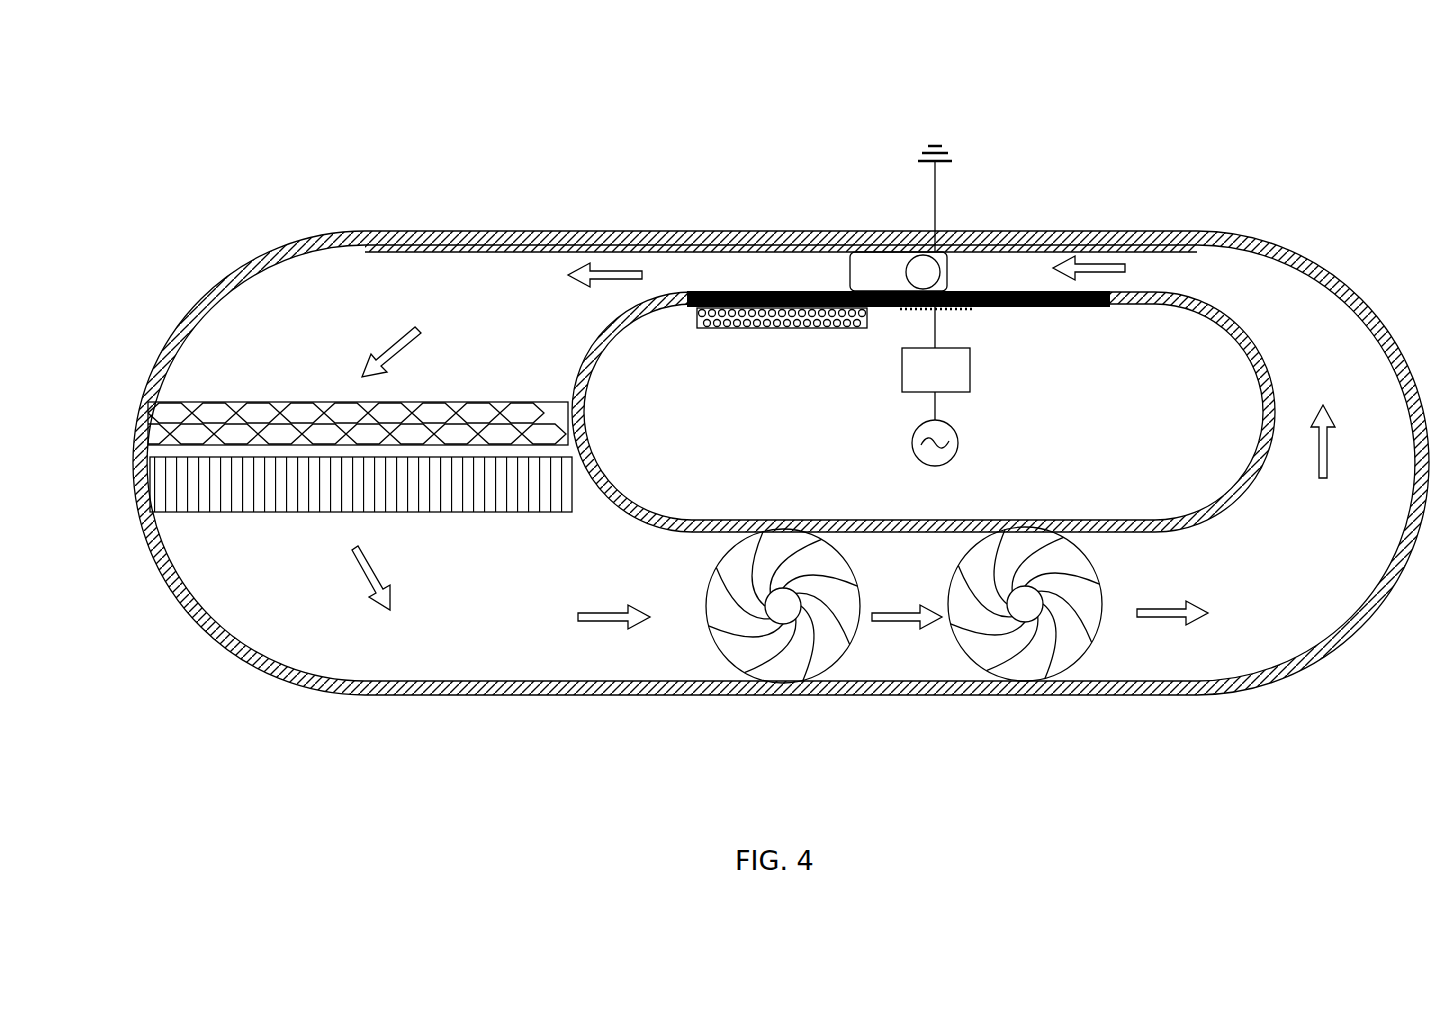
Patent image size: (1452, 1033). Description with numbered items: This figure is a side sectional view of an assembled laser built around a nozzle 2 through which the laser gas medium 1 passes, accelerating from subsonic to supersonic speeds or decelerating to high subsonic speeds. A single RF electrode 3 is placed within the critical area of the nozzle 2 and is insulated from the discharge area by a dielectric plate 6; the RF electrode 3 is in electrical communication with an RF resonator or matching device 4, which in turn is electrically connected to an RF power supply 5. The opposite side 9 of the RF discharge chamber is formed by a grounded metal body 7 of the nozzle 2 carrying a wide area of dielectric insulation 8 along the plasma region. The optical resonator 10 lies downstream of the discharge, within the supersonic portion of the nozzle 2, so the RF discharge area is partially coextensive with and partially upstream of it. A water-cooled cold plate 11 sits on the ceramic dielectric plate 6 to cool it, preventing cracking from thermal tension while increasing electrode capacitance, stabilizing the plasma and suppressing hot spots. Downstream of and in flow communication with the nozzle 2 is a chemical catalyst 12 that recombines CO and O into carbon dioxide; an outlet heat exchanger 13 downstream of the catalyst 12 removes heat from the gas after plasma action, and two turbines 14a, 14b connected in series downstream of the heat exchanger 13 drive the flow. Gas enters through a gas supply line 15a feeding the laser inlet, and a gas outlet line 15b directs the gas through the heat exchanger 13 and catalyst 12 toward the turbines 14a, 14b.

The laser gas medium 1 is at (1100, 267).
The nozzle 2 is at (781, 472).
The RF electrode 3 is at (967, 310).
The RF resonator or matching device 4 is at (955, 365).
The RF power supply 5 is at (955, 448).
The dielectric plate 6 is at (1047, 305).
The grounded metal body 7 is at (752, 245).
The dielectric insulation 8 is at (810, 253).
The opposite side of RF discharge chamber 9 is at (933, 138).
The optical resonator 10 is at (922, 267).
The cold plate 11 is at (765, 325).
The chemical catalyst 12 is at (460, 400).
The outlet heat exchanger 13 is at (468, 513).
The turbine 14a is at (785, 668).
The turbine 14b is at (1015, 643).
The gas supply line 15a is at (1310, 287).
The gas outlet line 15b is at (272, 308).